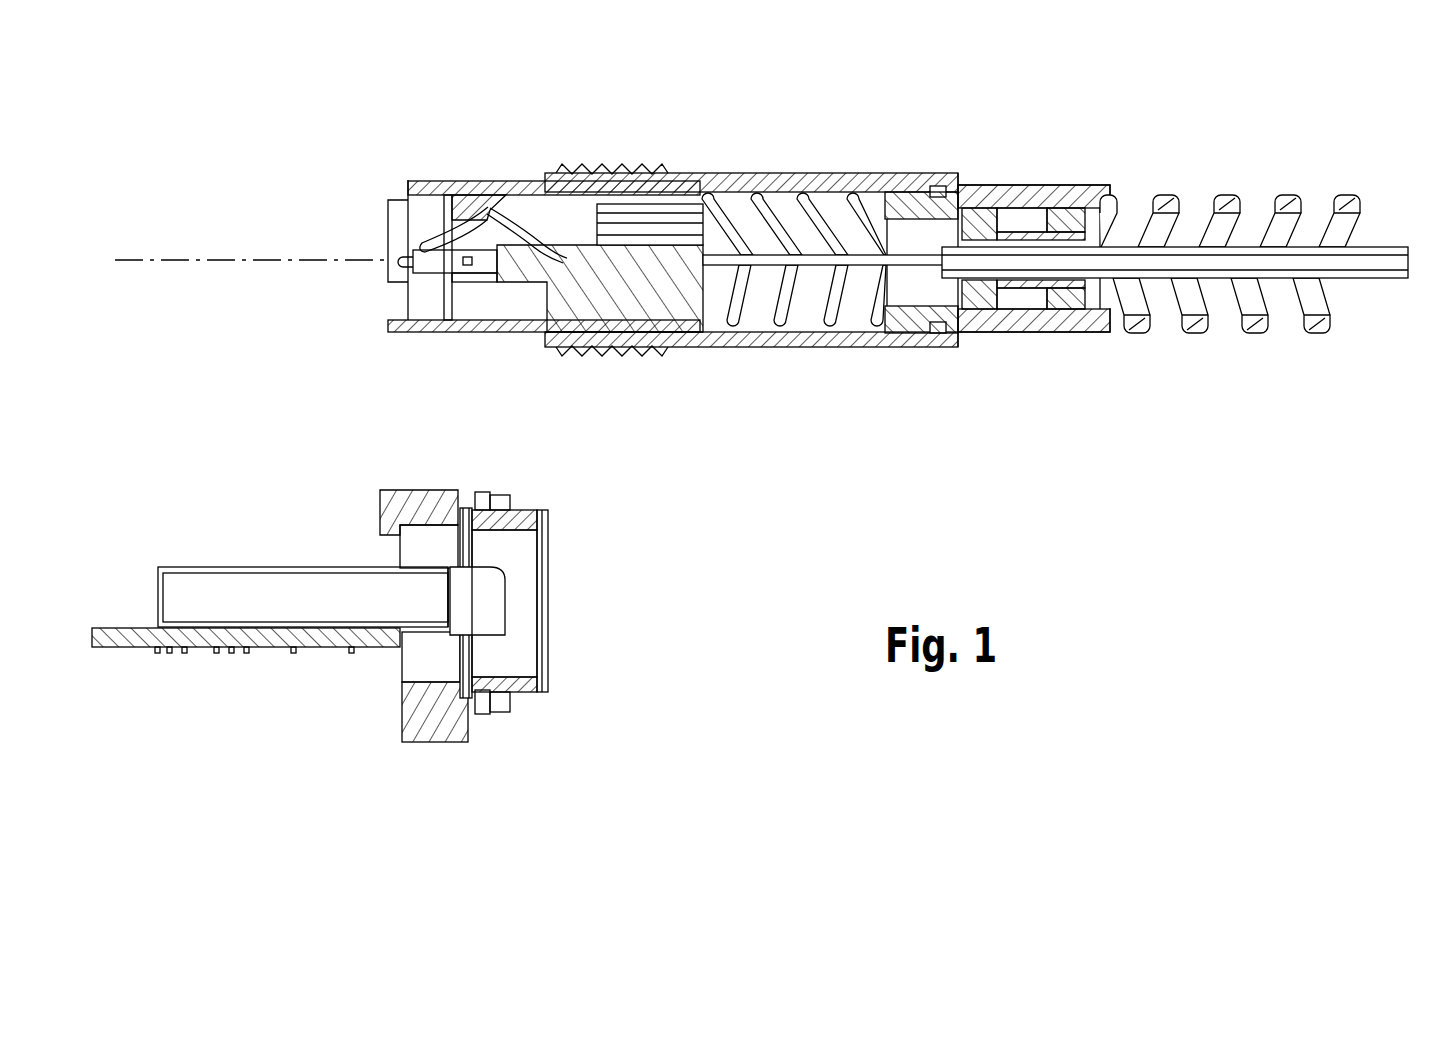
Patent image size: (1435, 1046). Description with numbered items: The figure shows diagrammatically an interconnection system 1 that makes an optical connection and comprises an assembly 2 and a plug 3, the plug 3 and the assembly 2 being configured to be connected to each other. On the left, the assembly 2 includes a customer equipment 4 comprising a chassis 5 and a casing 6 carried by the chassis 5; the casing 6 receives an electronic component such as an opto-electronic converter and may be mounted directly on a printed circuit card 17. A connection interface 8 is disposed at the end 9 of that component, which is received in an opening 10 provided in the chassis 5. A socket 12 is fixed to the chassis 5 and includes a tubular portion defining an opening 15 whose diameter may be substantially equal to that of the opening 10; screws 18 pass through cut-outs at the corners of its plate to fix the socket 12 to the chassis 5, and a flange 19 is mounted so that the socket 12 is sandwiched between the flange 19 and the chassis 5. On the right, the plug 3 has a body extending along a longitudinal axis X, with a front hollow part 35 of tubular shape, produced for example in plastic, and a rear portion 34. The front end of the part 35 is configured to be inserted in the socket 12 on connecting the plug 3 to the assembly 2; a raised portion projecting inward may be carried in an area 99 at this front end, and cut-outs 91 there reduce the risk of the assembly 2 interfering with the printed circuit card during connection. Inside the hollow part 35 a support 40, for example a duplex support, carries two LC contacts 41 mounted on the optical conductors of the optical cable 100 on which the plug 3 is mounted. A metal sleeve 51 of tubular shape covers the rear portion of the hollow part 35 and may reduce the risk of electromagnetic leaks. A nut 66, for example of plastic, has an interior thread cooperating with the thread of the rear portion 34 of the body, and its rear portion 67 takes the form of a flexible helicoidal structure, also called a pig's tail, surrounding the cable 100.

The interconnection system 1 is at (372, 150).
The assembly 2 is at (440, 440).
The plug 3 is at (930, 378).
The customer equipment 4 is at (453, 468).
The chassis 5 is at (425, 703).
The casing 6 is at (345, 568).
The connection interface 8 is at (510, 608).
The end 9 is at (440, 617).
The opening 10 is at (443, 662).
The socket 12 is at (535, 470).
The opening 15 is at (520, 556).
The printed circuit card 17 is at (175, 647).
The screws 18 is at (500, 706).
The flange 19 is at (482, 714).
The rear portion 34 is at (985, 185).
The hollow part 35 is at (475, 195).
The support 40 is at (670, 320).
The LC contacts 41 is at (468, 268).
The metal sleeve 51 is at (820, 175).
The nut 66 is at (1035, 335).
The rear portion 67 is at (1195, 332).
The cut-outs 91 is at (395, 300).
The area 99 is at (432, 182).
The optical cable 100 is at (1278, 282).